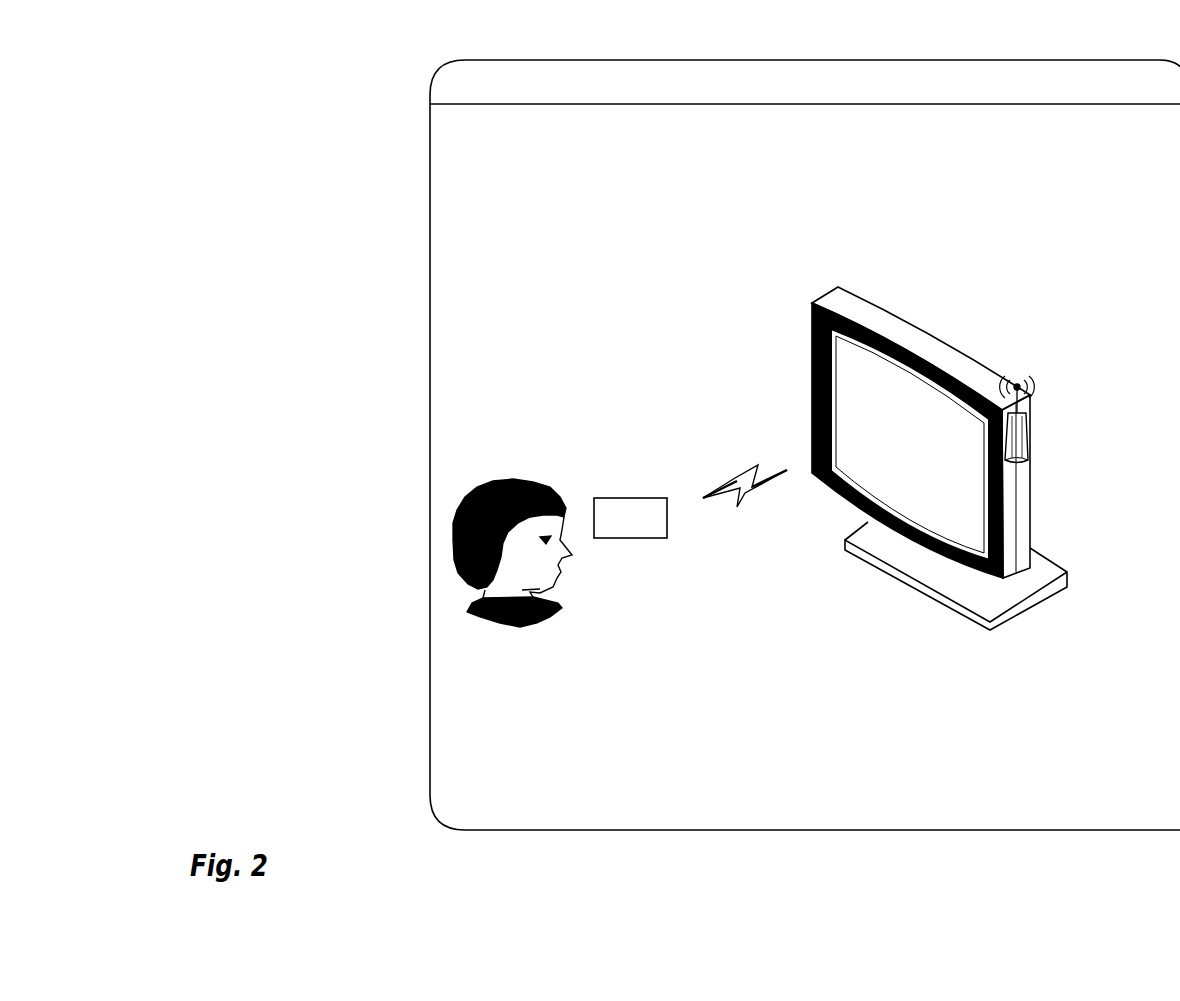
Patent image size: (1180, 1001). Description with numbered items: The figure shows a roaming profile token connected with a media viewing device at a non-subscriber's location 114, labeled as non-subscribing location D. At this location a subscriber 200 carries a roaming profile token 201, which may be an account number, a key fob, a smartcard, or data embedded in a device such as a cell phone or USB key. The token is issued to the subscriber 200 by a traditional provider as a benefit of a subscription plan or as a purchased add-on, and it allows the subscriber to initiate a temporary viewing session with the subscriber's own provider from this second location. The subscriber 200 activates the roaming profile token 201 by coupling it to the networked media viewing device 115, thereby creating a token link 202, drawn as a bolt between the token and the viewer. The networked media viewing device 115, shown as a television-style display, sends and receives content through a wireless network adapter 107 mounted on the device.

The non-subscriber's location 114 is at (772, 58).
The networked media viewing device 115 is at (913, 315).
The wireless network adapter 107 is at (1033, 444).
The subscriber 200 is at (507, 474).
The roaming profile token 201 is at (632, 494).
The token link 202 is at (755, 462).